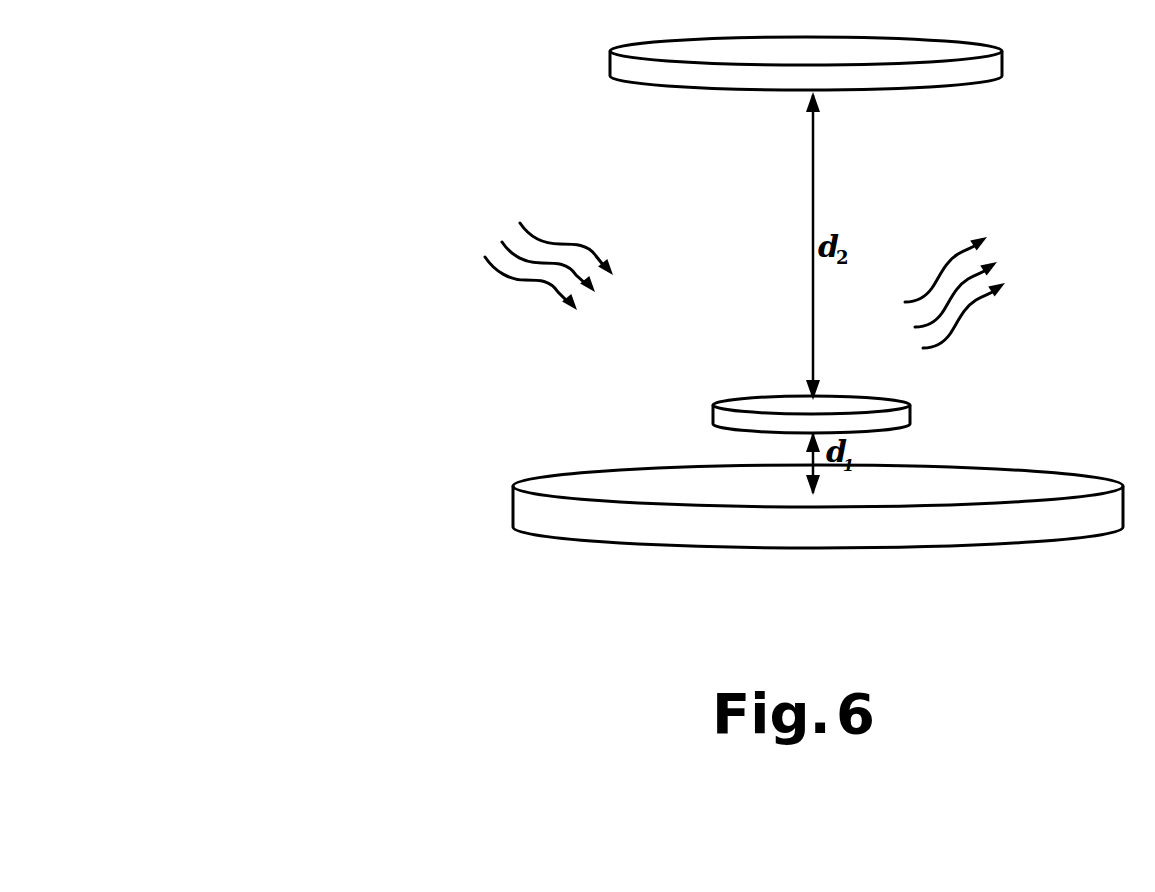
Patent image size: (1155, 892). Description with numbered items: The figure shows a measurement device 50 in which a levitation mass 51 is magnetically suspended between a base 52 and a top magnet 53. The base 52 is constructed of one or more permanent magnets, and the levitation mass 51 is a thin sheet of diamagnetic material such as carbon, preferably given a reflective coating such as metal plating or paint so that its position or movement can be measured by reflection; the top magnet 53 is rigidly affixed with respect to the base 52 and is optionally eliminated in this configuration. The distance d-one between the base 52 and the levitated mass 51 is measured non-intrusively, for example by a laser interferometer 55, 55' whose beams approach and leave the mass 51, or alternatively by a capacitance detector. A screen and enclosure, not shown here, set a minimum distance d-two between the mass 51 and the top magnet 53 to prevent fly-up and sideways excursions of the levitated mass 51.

The substrate processing apparatus 50 is at (318, 110).
The levitation mass 51 is at (713, 410).
The base 52 is at (513, 490).
The top magnet 53 is at (610, 67).
The laser interferometer 55 is at (490, 268).
The laser interferometer 55' is at (991, 303).